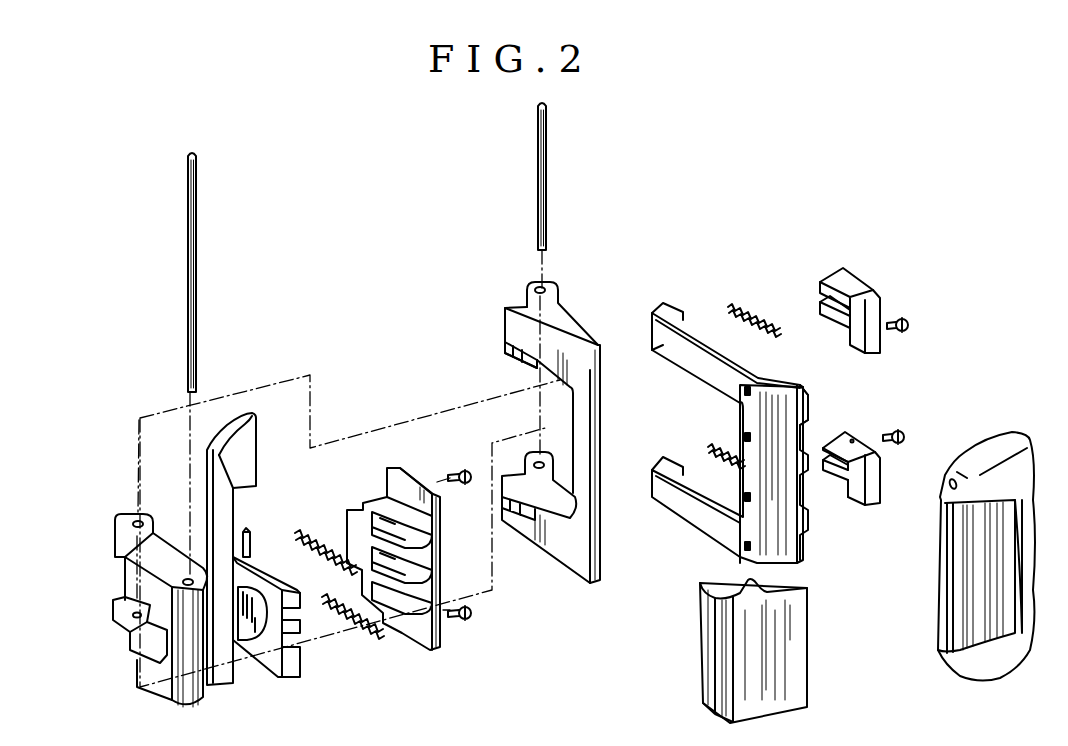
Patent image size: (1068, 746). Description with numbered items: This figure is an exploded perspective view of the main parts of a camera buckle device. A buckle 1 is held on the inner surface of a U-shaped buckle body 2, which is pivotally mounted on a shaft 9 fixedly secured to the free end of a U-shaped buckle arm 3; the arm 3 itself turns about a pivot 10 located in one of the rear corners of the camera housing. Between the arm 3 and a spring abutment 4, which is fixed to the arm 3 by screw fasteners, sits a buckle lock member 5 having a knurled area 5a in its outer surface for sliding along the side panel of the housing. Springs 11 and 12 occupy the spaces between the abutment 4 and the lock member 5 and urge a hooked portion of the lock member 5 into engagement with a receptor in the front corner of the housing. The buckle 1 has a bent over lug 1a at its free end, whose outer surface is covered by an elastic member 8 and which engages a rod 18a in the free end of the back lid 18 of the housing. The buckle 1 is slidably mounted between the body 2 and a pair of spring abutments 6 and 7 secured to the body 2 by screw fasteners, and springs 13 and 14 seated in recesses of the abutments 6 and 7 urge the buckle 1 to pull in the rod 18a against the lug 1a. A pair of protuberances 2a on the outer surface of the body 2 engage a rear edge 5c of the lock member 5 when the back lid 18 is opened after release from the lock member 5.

The buckle 1 is at (688, 517).
The bent over lug 1a is at (793, 377).
The buckle body 2 is at (560, 553).
The protuberances 2a is at (510, 372).
The buckle arm 3 is at (133, 657).
The spring abutment 4 is at (440, 637).
The buckle lock member 5 is at (215, 492).
The knurled area 5a is at (253, 633).
The rear edge 5c is at (233, 663).
The spring abutment 6 is at (863, 282).
The spring abutment 7 is at (868, 483).
The elastic member 8 is at (802, 663).
The shaft 9 is at (548, 205).
The pivot 10 is at (197, 262).
The spring 11 is at (318, 535).
The spring 12 is at (330, 633).
The spring 13 is at (757, 320).
The spring 14 is at (715, 438).
The back lid 18 is at (990, 452).
The rod 18a is at (947, 578).